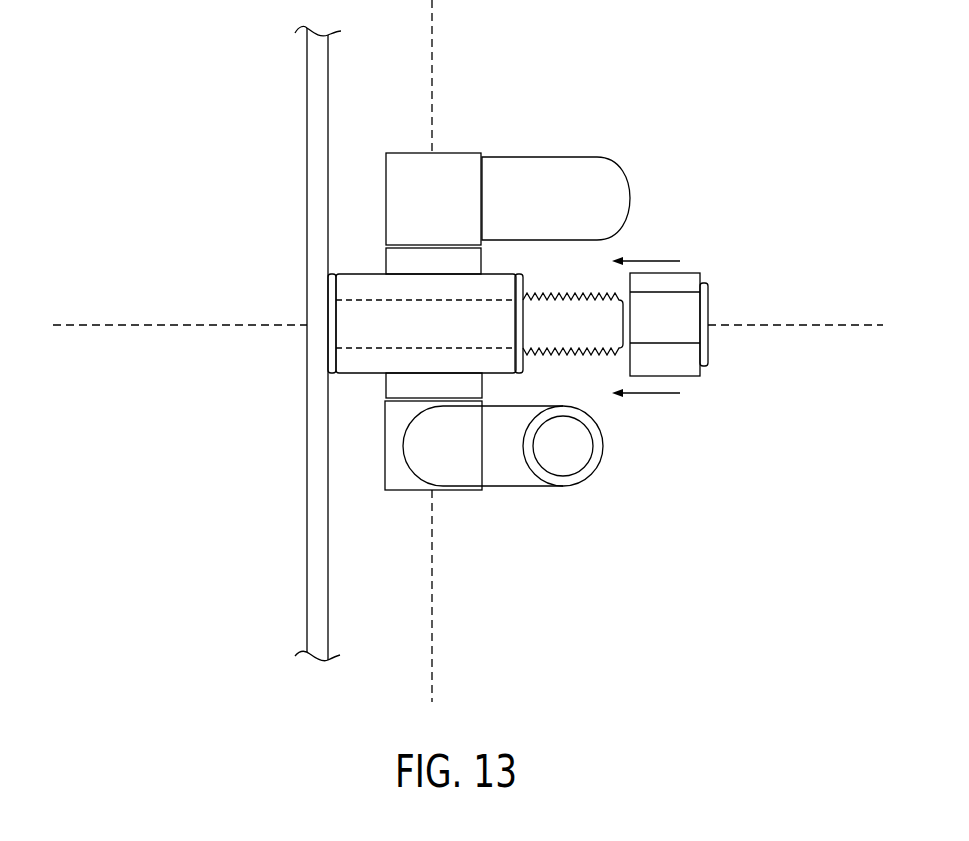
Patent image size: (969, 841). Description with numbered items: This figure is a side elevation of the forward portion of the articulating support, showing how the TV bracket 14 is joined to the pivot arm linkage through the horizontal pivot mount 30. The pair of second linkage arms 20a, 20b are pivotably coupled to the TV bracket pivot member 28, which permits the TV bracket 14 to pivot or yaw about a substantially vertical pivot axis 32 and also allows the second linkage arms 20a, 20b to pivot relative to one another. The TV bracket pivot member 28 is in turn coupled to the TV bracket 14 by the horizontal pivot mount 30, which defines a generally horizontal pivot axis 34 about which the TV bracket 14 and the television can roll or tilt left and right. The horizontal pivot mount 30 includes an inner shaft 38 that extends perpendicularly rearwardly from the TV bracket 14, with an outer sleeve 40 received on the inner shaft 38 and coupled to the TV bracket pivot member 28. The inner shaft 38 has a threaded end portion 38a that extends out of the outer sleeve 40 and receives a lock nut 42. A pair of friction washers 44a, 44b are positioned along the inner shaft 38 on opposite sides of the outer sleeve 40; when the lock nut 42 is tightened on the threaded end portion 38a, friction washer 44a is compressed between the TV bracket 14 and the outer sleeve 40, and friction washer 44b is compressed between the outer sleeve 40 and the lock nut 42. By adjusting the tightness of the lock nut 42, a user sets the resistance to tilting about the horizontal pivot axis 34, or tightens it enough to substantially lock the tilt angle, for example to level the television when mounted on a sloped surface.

The TV bracket 14 is at (307, 88).
The second linkage arm 20a is at (515, 478).
The second linkage arm 20b is at (540, 169).
The TV bracket pivot member 28 is at (368, 226).
The horizontal pivot mount 30 is at (350, 252).
The vertical pivot axis 32 is at (433, 18).
The horizontal pivot axis 34 is at (146, 323).
The inner shaft 38 is at (422, 298).
The threaded end portion 38a is at (592, 272).
The outer sleeve 40 is at (378, 377).
The lock nut 42 is at (691, 271).
The friction washer 44a is at (332, 375).
The friction washer 44b is at (525, 362).